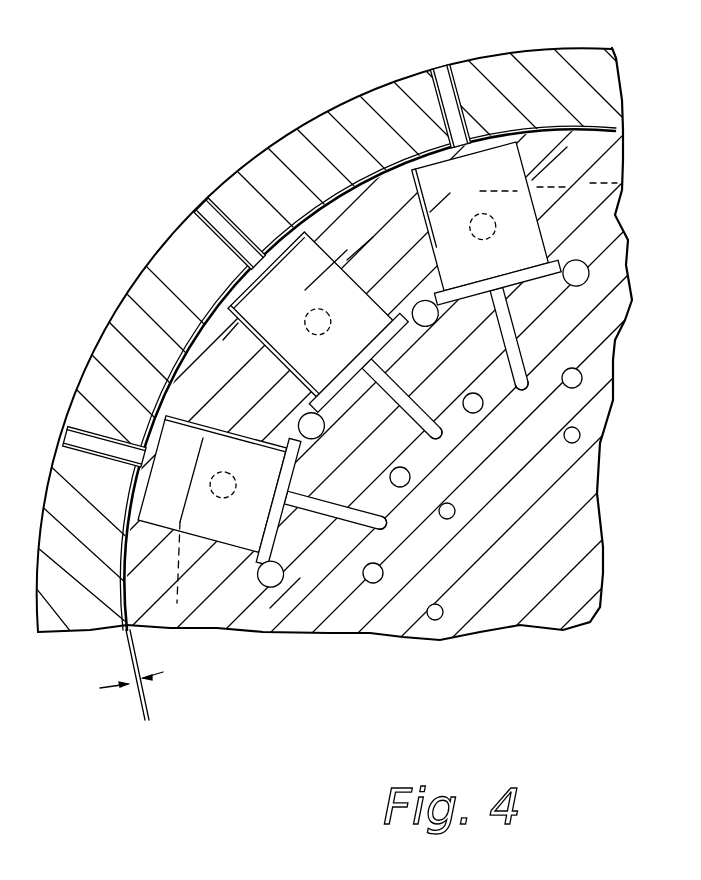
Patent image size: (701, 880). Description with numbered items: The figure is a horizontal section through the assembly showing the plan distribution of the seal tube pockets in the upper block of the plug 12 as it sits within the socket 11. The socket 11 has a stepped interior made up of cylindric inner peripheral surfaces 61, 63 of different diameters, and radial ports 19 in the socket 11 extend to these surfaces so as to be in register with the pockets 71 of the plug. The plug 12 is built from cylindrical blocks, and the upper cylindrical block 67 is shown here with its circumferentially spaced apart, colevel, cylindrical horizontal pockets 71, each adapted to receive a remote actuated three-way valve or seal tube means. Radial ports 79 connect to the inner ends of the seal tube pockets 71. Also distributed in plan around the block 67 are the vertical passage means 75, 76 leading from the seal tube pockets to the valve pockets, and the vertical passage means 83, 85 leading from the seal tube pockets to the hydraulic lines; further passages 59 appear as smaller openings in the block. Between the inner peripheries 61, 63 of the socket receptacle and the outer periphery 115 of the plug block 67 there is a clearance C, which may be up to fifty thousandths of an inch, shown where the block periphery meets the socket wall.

The socket 11 is at (166, 252).
The plug 12 is at (543, 612).
The radial ports 19 is at (441, 76).
The small hole 59 is at (573, 443).
The inner peripheral surface 61 is at (127, 645).
The inner peripheral surface 63 is at (180, 593).
The upper cylindrical block 67 is at (270, 608).
The pockets 71 is at (418, 193).
The vertical passage means 75 is at (410, 316).
The vertical passage means 76 is at (490, 250).
The radial ports 79 is at (497, 300).
The vertical passage means 83 is at (529, 391).
The vertical passage means 85 is at (582, 375).
The outer periphery 115 is at (133, 710).
The clearance C is at (114, 687).